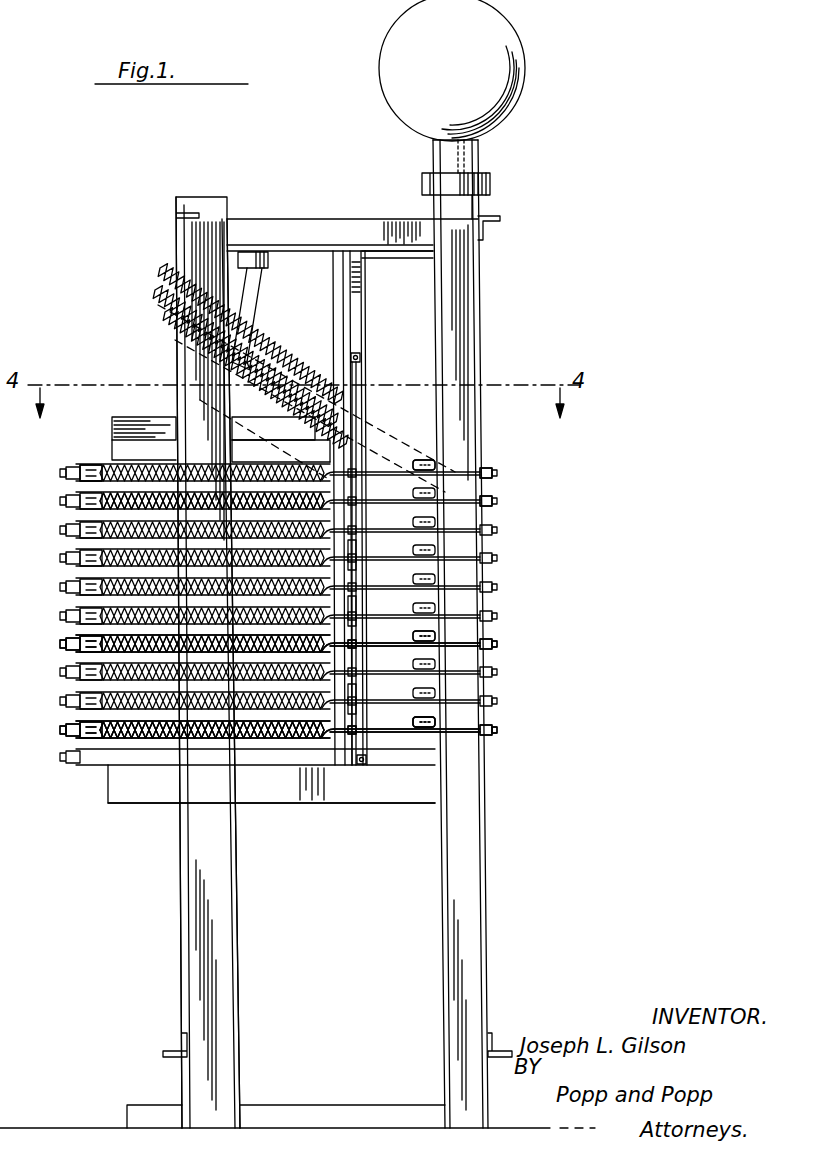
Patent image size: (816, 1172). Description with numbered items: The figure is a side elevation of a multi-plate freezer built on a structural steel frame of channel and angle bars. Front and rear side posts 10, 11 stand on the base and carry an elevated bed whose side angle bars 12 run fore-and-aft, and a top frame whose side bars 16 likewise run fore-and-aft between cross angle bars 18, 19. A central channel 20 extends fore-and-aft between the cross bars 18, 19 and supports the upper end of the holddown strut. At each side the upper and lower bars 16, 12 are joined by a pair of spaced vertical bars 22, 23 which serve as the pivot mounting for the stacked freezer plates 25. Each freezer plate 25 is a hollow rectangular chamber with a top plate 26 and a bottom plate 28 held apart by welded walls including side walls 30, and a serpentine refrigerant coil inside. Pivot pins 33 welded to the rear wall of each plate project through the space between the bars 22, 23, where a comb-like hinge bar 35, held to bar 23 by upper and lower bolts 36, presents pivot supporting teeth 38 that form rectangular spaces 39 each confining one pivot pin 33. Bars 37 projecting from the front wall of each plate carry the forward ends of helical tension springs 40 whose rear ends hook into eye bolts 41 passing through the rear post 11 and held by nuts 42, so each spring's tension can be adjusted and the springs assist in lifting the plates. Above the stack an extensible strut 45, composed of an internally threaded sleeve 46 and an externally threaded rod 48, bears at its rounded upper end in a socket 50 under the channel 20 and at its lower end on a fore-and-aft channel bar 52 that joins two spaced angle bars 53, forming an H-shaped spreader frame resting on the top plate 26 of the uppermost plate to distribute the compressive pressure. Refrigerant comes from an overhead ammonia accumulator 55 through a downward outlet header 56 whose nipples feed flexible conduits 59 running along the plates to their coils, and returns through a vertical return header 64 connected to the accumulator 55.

The front side post 10 is at (238, 955).
The rear side post 11 is at (488, 955).
The side angle bar 12 is at (362, 806).
The side bar 16 is at (329, 223).
The cross angle bar 18 is at (182, 197).
The cross angle bar 19 is at (489, 219).
The central channel 20 is at (419, 248).
The vertical bar 22 is at (331, 268).
The vertical bar 23 is at (358, 282).
The freezer plate 25 is at (163, 287).
The top plate 26 is at (56, 677).
The bottom plate 28 is at (150, 765).
The side wall 30 is at (60, 741).
The pivot pin 33 is at (352, 712).
The hinge bar 35 is at (360, 374).
The bolt 36 is at (360, 356).
The bar 37 is at (78, 480).
The pivot supporting tooth 38 is at (352, 568).
The rectangular space 39 is at (352, 626).
The helical tension spring 40 is at (318, 362).
The eye bolt 41 is at (497, 500).
The nut 42 is at (497, 509).
The extensible strut 45 is at (258, 290).
The internally threaded sleeve 46 is at (248, 302).
The externally threaded rod 48 is at (258, 332).
The socket 50 is at (246, 252).
The fore-and-aft channel bar 52 is at (144, 412).
The angle bar 53 is at (112, 438).
The ammonia accumulator 55 is at (452, 70).
The outlet header 56 is at (440, 207).
The flexible ammonia conduit 59 is at (422, 458).
The vertical return header 64 is at (478, 207).